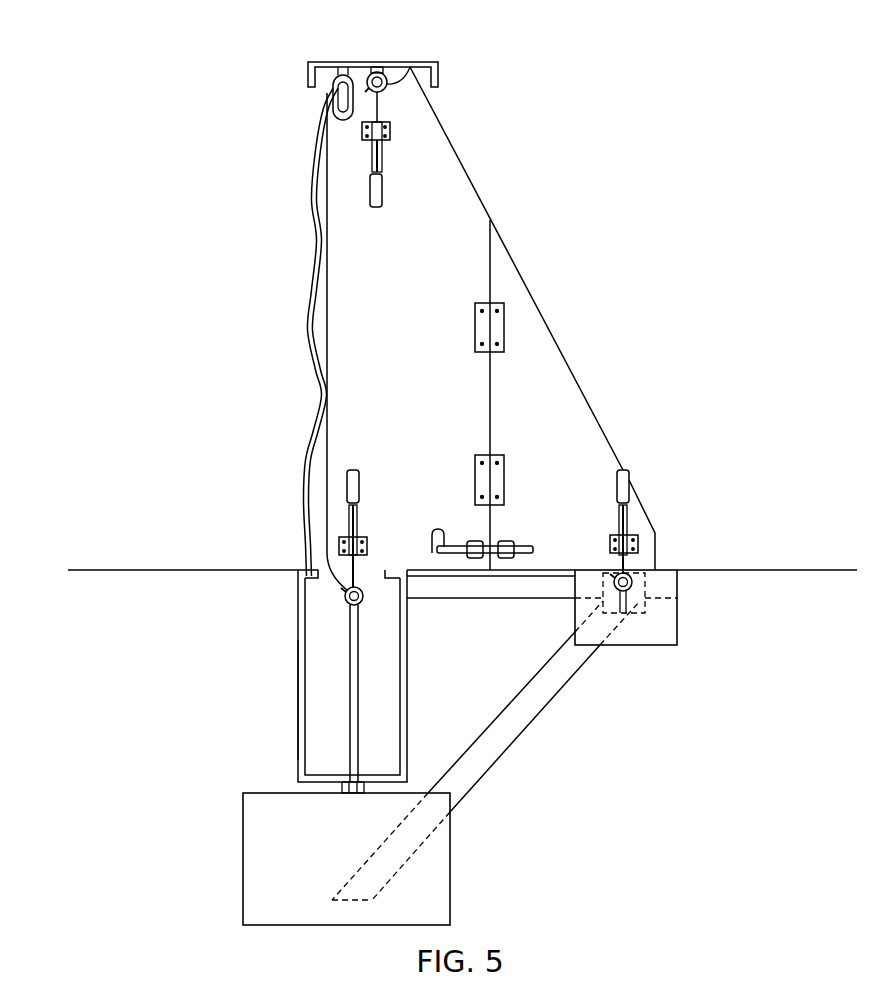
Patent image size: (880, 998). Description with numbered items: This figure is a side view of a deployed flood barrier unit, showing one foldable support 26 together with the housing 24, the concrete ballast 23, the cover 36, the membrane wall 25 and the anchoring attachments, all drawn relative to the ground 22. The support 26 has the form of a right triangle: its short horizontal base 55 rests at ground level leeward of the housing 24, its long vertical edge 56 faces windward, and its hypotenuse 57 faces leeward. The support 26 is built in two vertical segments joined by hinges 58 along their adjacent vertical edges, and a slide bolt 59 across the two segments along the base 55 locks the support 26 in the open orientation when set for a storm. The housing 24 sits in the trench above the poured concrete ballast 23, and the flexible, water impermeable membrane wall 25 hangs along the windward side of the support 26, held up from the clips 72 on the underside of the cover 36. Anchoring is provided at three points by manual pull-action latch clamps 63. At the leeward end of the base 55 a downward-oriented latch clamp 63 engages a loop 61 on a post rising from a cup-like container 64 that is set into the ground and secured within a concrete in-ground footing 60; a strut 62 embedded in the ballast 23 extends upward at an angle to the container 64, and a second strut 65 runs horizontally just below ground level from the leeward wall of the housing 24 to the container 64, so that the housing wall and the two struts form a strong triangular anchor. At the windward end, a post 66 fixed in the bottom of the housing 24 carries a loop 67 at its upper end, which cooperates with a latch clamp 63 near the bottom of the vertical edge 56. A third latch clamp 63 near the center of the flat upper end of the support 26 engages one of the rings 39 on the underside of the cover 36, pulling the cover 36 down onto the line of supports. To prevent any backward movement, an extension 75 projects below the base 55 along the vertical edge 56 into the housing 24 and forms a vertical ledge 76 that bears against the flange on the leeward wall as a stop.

The ground 22 is at (145, 603).
The concrete ballast 23 is at (285, 838).
The housing 24 is at (408, 720).
The membrane wall 25 is at (306, 320).
The foldable support 26 is at (561, 324).
The cover 36 is at (318, 61).
The ring 39 is at (411, 66).
The base 55 is at (559, 568).
The vertical edge 56 is at (328, 335).
The hypotenuse 57 is at (463, 163).
The hinge 58 is at (474, 330).
The slide bolt 59 is at (494, 548).
The concrete in-ground footing 60 is at (645, 643).
The loop 61 is at (634, 583).
The strut 62 is at (534, 720).
The latch clamp 63 is at (384, 183).
The container 64 is at (640, 598).
The second strut 65 is at (488, 584).
The post 66 is at (320, 706).
The loop 67 is at (346, 602).
The clip 72 is at (332, 92).
The extension 75 is at (393, 594).
The vertical ledge 76 is at (372, 575).